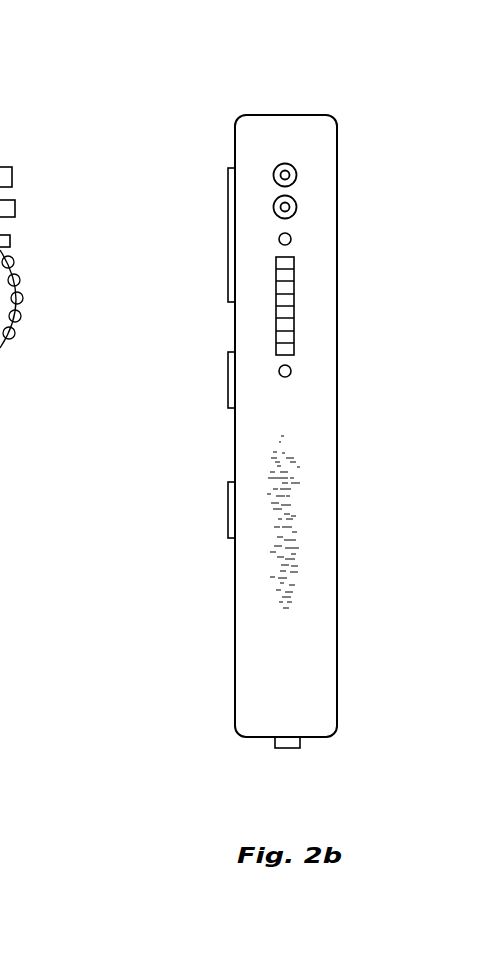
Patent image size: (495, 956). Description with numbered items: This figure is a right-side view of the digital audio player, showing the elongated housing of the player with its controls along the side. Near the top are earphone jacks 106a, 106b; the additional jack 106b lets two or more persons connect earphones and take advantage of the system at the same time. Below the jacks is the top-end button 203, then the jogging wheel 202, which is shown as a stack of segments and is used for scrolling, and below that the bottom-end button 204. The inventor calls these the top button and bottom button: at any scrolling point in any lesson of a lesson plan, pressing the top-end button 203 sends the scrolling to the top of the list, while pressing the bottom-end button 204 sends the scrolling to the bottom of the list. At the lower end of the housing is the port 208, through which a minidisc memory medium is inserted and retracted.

The earphone jack 106a is at (285, 163).
The earphone jack 106b is at (295, 203).
The jogging wheel 202 is at (276, 320).
The top-end button 203 is at (279, 239).
The bottom-end button 204 is at (279, 371).
The port 208 is at (280, 749).